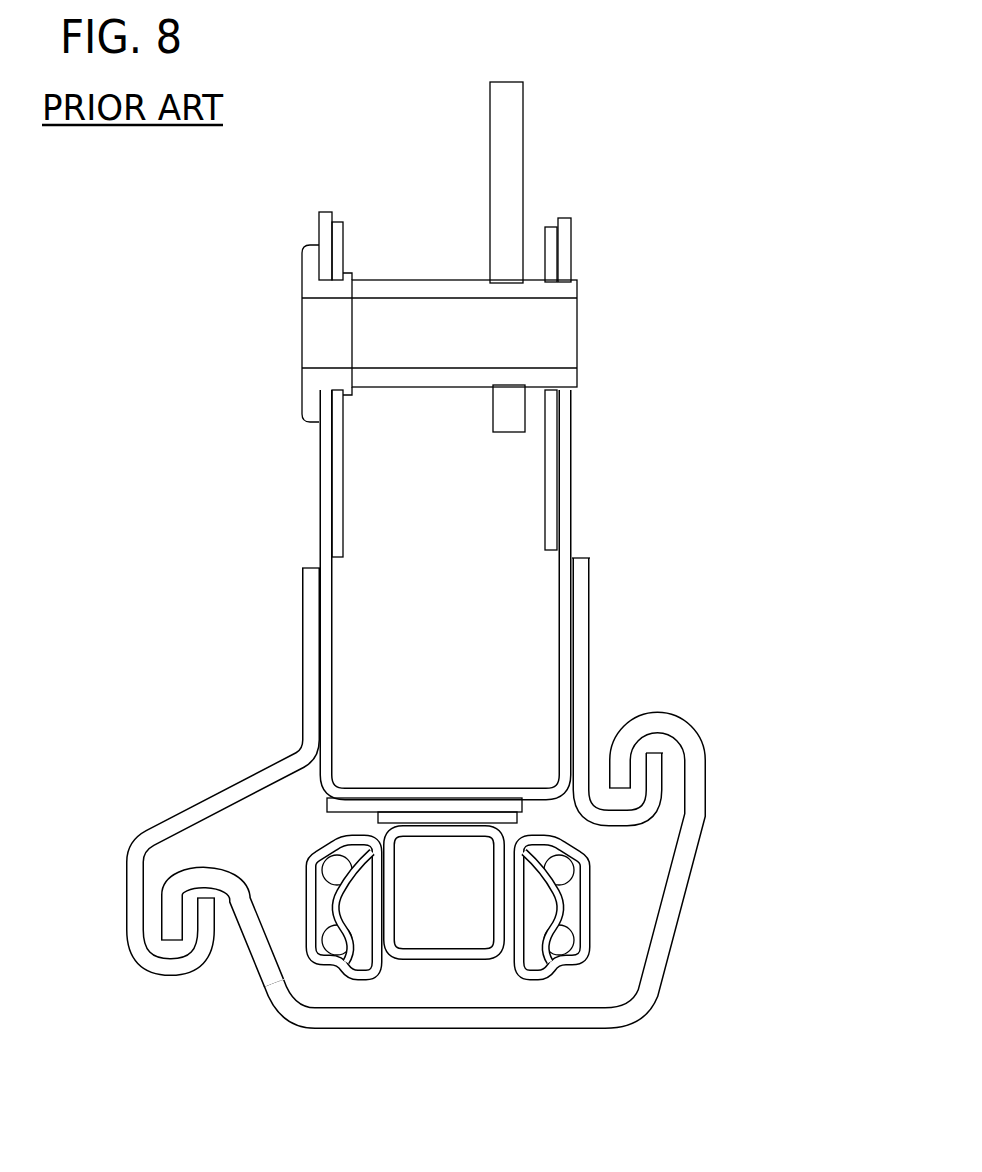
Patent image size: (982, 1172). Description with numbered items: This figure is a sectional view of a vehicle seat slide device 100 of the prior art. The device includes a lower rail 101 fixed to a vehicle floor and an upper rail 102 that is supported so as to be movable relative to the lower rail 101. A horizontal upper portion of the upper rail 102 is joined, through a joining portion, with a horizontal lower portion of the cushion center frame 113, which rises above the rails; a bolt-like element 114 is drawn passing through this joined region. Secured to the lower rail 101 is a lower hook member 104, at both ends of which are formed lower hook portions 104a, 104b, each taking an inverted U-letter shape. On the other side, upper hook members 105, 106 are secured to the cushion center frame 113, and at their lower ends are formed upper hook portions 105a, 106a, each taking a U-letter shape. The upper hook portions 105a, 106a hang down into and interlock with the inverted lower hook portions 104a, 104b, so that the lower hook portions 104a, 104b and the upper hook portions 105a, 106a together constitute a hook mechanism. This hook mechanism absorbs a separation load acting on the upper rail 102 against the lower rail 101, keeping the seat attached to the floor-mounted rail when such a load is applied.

The vehicle seat slide device 100 is at (752, 470).
The lower rail 101 is at (340, 983).
The upper rail 102 is at (510, 970).
The lower hook member 104 is at (450, 903).
The lower hook portion 104a is at (197, 867).
The lower hook portion 104b is at (660, 720).
The upper hook member 105 is at (207, 812).
The upper hook portion 105a is at (165, 968).
The upper hook member 106 is at (691, 719).
The upper hook portion 106a is at (637, 822).
The cushion center frame 113 is at (566, 470).
The bolt / rod 114 is at (513, 160).